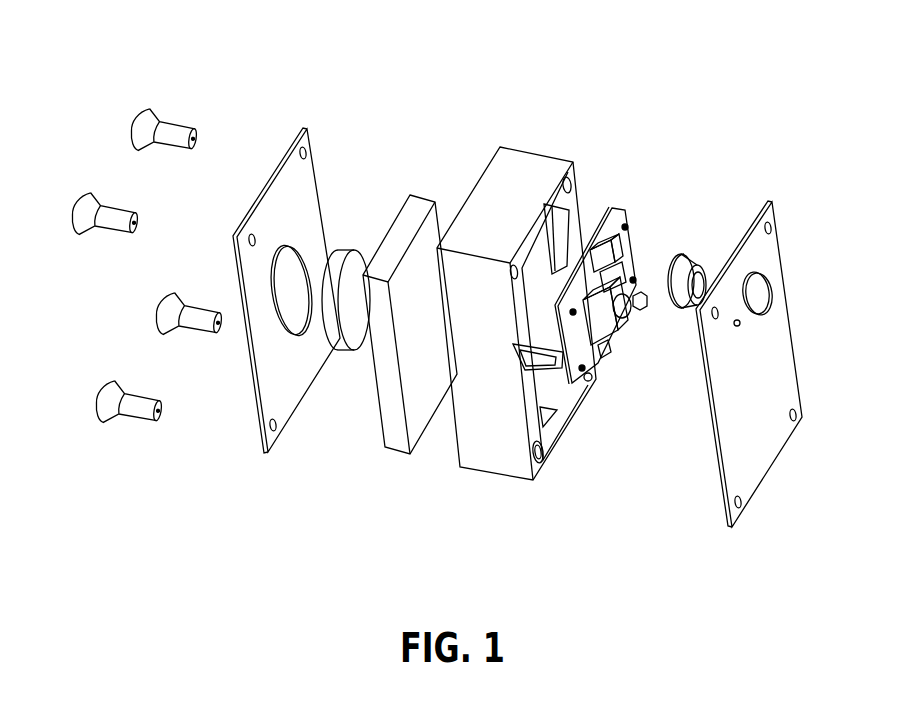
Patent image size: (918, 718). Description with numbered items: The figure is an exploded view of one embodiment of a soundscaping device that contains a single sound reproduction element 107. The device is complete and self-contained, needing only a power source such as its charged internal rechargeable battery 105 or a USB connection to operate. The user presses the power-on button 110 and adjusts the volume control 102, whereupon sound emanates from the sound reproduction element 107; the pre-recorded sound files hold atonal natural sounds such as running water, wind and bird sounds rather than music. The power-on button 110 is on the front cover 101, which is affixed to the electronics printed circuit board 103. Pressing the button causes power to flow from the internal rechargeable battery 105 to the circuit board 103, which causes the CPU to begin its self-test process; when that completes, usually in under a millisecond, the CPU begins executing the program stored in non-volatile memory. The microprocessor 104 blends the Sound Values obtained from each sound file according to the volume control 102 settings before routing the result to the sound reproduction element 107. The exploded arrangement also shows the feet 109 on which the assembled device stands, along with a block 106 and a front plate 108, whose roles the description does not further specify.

The front cover 101 is at (772, 200).
The volume control 102 is at (685, 250).
The electronics printed circuit board 103 is at (608, 205).
The microprocessor 104 is at (585, 390).
The internal rechargeable battery 105 is at (455, 435).
The block 106 is at (423, 192).
The sound reproduction element 107 is at (352, 247).
The front plate 108 is at (272, 173).
The feet 109 is at (138, 107).
The power-on button 110 is at (625, 322).